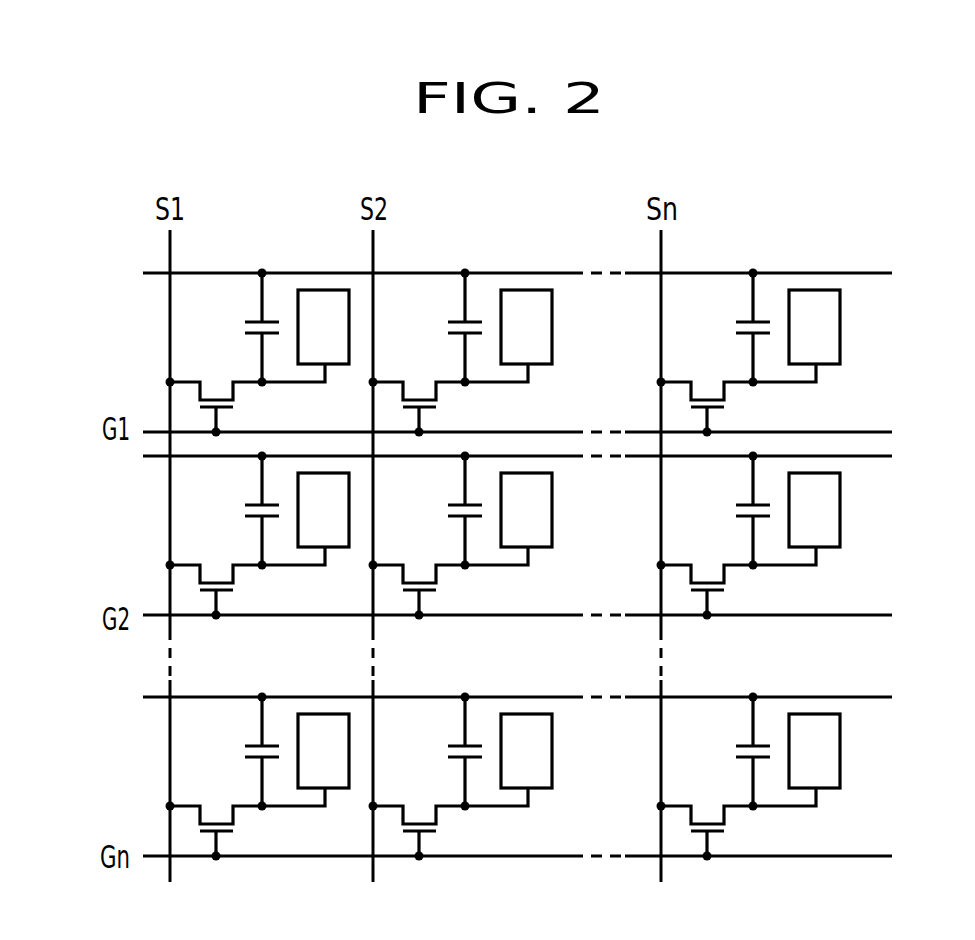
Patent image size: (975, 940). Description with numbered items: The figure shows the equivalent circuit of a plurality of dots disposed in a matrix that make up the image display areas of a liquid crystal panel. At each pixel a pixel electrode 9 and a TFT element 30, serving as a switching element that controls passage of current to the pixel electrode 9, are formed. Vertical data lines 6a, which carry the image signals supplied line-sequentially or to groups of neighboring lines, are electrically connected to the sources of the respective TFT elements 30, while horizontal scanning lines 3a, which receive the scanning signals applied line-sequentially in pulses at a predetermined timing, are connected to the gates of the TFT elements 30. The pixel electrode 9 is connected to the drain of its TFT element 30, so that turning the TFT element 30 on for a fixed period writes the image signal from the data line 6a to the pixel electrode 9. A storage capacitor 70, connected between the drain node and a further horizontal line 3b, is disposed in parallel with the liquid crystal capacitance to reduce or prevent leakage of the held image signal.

The scanning line 3a is at (152, 432).
The capacitor line 3b is at (150, 273).
The data line 6a is at (173, 243).
The pixel electrode 9 is at (327, 298).
The TFT element 30 is at (242, 406).
The storage capacitor 70 is at (245, 328).